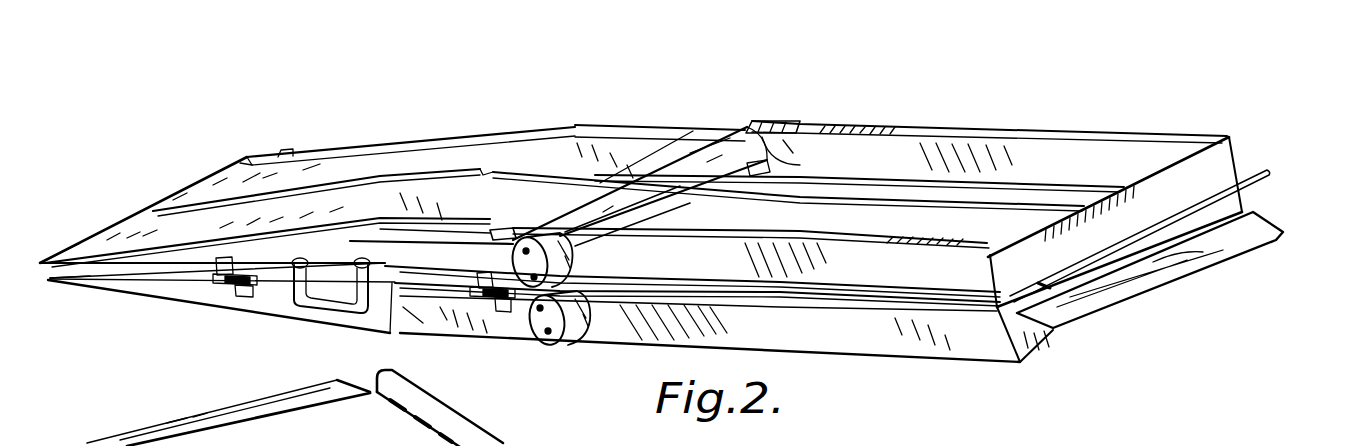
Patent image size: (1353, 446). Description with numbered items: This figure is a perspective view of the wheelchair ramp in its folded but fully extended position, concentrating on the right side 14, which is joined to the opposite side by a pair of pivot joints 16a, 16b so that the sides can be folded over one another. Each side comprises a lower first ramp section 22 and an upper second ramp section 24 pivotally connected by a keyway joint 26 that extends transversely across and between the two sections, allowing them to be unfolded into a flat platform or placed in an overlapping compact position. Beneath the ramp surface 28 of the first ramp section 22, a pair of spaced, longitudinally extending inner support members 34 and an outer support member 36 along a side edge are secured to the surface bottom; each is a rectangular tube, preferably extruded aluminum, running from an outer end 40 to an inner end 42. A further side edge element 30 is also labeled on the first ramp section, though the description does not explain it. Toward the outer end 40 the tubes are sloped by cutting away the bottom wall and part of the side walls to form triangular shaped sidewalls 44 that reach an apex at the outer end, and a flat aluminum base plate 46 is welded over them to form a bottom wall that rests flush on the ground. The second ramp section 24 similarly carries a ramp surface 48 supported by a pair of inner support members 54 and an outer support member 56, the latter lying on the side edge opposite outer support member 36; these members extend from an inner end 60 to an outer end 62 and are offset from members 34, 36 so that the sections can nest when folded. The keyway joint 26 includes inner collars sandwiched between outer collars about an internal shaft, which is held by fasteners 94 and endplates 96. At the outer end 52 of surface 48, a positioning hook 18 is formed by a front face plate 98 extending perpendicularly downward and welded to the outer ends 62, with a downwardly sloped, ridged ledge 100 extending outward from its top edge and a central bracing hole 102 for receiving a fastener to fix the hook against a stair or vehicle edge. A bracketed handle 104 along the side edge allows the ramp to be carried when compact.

The right side 14 is at (598, 121).
The pivot joint 16a is at (222, 285).
The pivot joint 16b is at (488, 300).
The positioning hook 18 is at (1050, 340).
The first ramp section 22 is at (242, 105).
The second ramp section 24 is at (1222, 122).
The keyway joint 26 is at (813, 80).
The ramp surface 28 is at (254, 166).
The side edge rail 30 is at (230, 163).
The inner support member 34 is at (563, 157).
The outer support member 36 is at (420, 250).
The outer end 40 is at (178, 200).
The inner end 42 is at (500, 272).
The triangular shaped sidewalls 44 is at (468, 167).
The base plate 46 is at (320, 192).
The ramp surface 48 is at (1035, 192).
The outer end 52 is at (1000, 308).
The inner support member 54 is at (883, 273).
The outer support member 56 is at (897, 160).
The inner end 60 is at (800, 155).
The outer end 62 is at (1220, 136).
The fastener 94 is at (537, 318).
The endplate 96 is at (562, 266).
The front face plate 98 is at (1227, 167).
The ledge 100 is at (1257, 228).
The bracing hole 102 is at (1207, 260).
The bracketed handle 104 is at (317, 307).